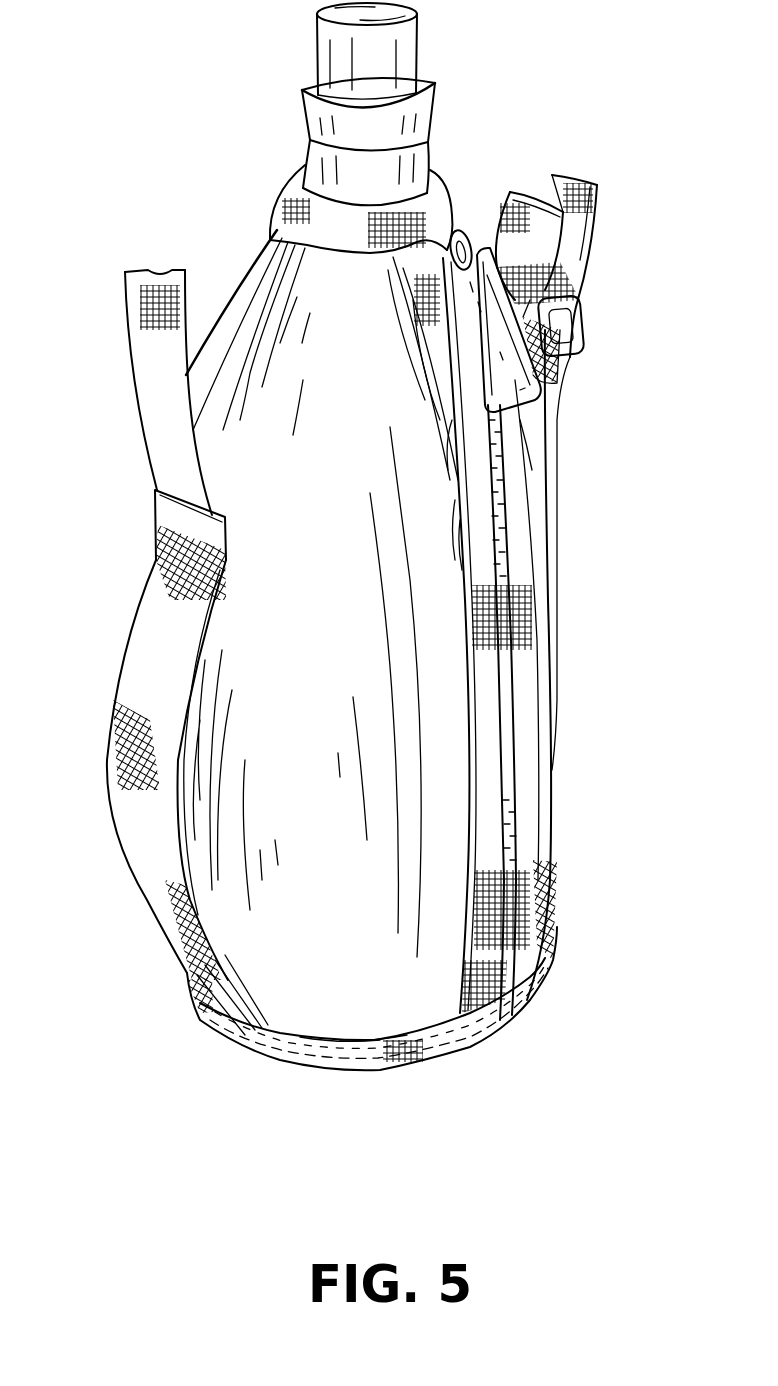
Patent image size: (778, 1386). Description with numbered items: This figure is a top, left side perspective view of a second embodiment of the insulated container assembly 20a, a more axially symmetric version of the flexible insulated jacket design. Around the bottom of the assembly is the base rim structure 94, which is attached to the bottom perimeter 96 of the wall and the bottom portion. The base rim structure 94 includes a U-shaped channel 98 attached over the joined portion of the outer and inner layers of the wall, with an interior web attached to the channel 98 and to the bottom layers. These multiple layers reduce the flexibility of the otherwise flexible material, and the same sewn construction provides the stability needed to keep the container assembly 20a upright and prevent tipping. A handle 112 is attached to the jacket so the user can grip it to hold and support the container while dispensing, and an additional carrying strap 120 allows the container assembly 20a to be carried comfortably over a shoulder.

The container assembly 20a is at (616, 696).
The base rim structure 94 is at (476, 1056).
The bottom perimeter 96 is at (372, 1022).
The U-shaped channel 98 is at (433, 1053).
The handle 112 is at (112, 768).
The carrying strap 120 is at (150, 388).